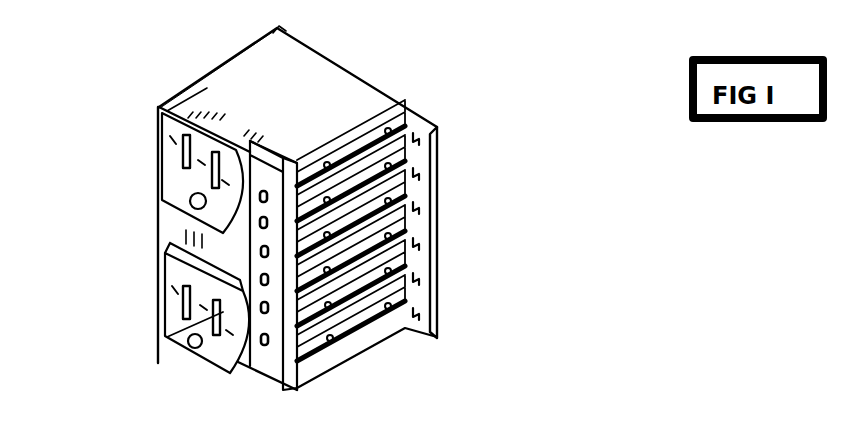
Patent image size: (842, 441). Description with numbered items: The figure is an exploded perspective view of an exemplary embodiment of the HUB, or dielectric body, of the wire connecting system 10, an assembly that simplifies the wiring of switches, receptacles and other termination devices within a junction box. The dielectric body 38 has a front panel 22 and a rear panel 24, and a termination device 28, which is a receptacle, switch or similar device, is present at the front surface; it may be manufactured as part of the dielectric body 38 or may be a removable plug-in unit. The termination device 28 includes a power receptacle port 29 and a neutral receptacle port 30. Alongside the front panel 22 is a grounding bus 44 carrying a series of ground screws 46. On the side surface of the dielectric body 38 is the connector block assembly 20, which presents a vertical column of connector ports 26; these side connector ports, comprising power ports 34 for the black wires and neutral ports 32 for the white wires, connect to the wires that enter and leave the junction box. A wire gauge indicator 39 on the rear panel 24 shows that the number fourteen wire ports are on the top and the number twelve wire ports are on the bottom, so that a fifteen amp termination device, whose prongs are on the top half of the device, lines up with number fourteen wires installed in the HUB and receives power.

The wire connecting system 10 is at (103, 92).
The dielectric body 38 is at (260, 97).
The connector block assembly 20 is at (363, 72).
The front panel 22 is at (187, 233).
The termination device 28 is at (167, 150).
The neutral receptacle port 30 is at (188, 298).
The power receptacle port 29 is at (173, 335).
The grounding bus 44 is at (297, 388).
The ground screws 46 is at (252, 349).
The vertical column of connector ports 26 is at (383, 130).
The power ports 34 is at (332, 333).
The neutral ports 32 is at (402, 153).
The wire gauge indicator 39 is at (418, 243).
The rear panel 24 is at (438, 204).